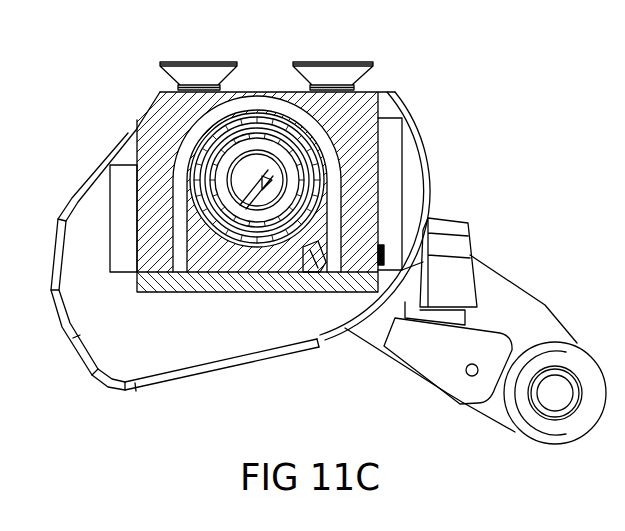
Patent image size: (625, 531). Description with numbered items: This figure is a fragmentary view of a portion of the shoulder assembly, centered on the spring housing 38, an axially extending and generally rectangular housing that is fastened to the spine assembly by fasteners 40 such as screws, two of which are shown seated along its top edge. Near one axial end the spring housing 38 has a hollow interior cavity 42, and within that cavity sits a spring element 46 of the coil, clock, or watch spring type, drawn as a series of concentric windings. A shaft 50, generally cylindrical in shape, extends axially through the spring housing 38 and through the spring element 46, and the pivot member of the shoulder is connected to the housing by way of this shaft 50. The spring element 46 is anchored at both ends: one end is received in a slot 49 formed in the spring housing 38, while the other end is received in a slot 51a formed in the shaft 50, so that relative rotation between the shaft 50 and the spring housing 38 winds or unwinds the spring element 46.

The spring housing 38 is at (85, 243).
The fasteners 40 is at (200, 62).
The hollow interior cavity 42 is at (262, 108).
The spring element 46 is at (372, 110).
The slot 49 is at (322, 275).
The shaft 50 is at (225, 152).
The slot 51a is at (278, 190).